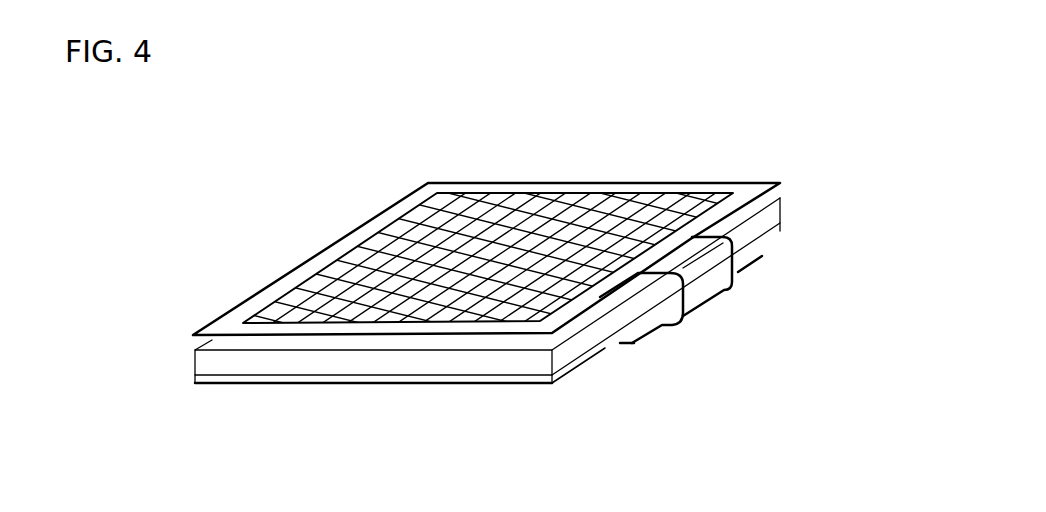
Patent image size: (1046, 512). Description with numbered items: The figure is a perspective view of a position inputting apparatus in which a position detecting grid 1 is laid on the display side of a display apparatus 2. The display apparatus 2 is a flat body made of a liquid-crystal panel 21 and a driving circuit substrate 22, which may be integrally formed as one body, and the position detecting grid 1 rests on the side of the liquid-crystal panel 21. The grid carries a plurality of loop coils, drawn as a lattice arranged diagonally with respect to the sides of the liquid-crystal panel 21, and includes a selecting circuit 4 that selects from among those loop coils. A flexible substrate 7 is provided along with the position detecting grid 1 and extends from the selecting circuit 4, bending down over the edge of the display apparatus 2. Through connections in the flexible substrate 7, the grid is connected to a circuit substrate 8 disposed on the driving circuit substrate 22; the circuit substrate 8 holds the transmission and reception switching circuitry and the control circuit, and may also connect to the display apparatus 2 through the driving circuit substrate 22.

The position detecting grid 1 is at (455, 218).
The display apparatus 2 is at (412, 347).
The selecting circuit 4 is at (533, 182).
The flexible substrate 7 is at (708, 277).
The circuit substrate 8 is at (637, 344).
The liquid-crystal panel 21 is at (205, 362).
The driving circuit substrate 22 is at (197, 383).